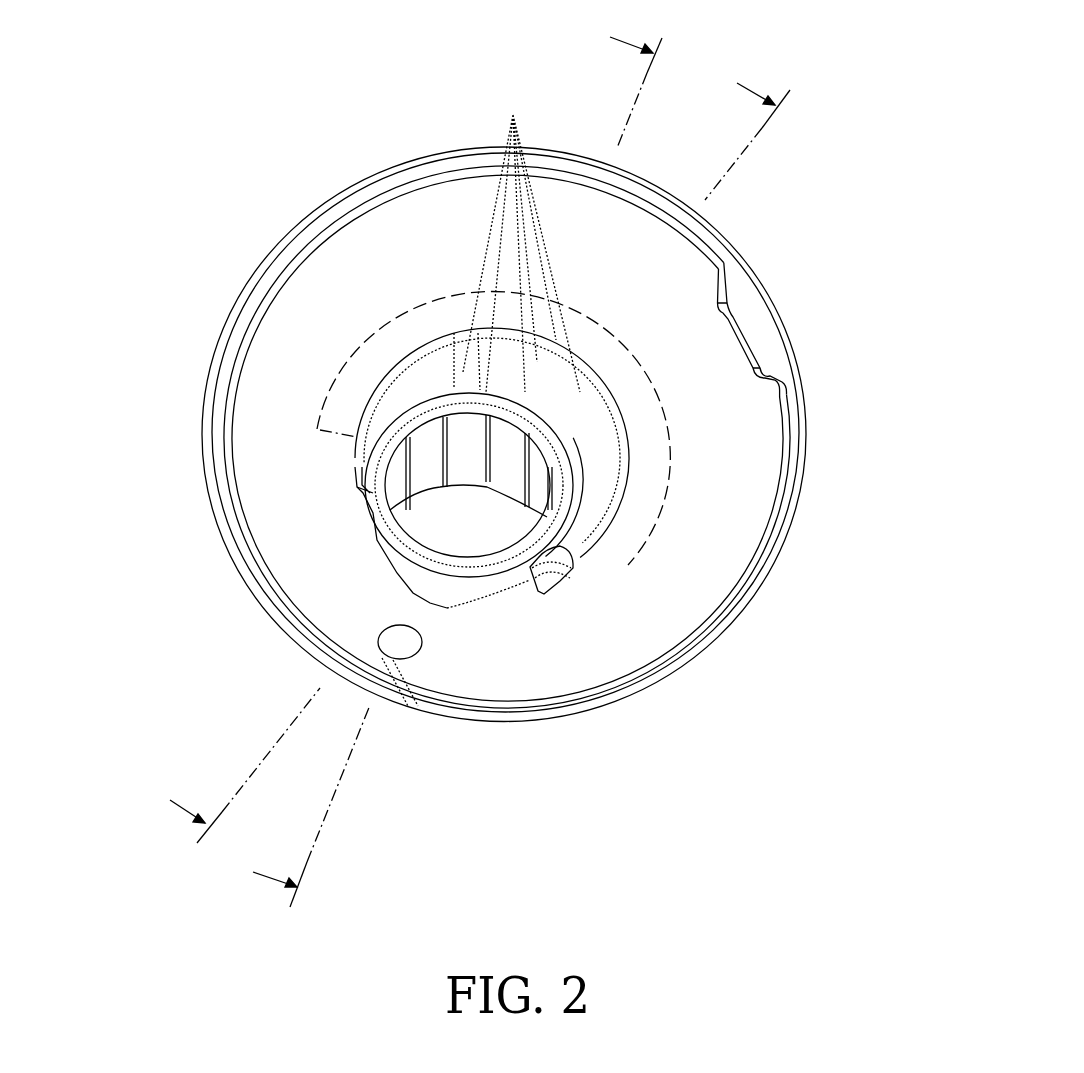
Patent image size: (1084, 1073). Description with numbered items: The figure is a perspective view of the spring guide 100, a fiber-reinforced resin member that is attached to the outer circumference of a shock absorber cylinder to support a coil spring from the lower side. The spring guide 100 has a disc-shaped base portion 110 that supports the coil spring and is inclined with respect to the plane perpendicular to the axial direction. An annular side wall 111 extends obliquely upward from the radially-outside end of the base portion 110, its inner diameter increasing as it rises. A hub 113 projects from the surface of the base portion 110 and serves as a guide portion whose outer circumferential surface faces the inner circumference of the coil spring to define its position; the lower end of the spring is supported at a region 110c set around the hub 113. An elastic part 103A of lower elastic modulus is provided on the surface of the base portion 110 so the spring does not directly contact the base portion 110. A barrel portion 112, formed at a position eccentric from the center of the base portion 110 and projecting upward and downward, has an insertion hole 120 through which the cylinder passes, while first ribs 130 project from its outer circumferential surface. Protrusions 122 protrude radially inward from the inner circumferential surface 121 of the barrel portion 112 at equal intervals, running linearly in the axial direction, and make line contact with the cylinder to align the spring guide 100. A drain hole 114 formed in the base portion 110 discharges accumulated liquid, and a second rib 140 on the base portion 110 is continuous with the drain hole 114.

The spring guide 100 is at (187, 102).
The side wall 111 is at (340, 193).
The base portion 110 is at (307, 562).
The region 110c is at (578, 332).
The elastic part 103A is at (660, 585).
The hub 113 is at (599, 357).
The insertion hole 120 is at (445, 557).
The barrel portion 112 is at (372, 515).
The inner circumferential surface 121 is at (423, 437).
The protrusions 122 is at (530, 472).
The first ribs 130 is at (517, 237).
The drain hole 114 is at (379, 647).
The second rib 140 is at (410, 663).